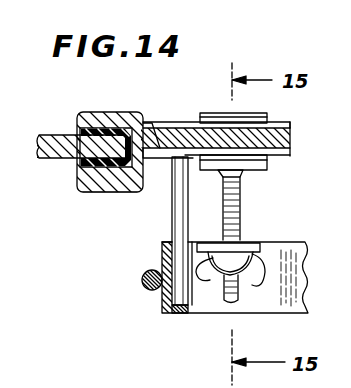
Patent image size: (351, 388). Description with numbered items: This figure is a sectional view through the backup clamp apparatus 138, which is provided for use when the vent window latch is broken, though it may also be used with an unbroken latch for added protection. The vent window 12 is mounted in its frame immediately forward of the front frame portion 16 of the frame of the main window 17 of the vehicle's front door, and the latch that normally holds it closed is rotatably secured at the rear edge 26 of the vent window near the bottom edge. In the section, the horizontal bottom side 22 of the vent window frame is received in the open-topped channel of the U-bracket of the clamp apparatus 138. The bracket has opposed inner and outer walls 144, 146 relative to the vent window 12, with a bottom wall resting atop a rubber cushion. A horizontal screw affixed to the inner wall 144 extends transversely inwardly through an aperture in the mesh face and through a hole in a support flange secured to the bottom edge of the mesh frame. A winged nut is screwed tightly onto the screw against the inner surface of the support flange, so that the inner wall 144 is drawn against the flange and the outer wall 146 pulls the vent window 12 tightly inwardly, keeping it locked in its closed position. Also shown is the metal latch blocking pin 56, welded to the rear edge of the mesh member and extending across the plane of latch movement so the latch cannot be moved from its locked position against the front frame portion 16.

The vent window 12 is at (290, 140).
The front frame portion 16 is at (102, 193).
The main window 17 is at (47, 136).
The horizontal bottom side 22 is at (288, 122).
The rear edge 26 is at (140, 112).
The latch blocking pin 56 is at (172, 220).
The backup clamp apparatus 138 is at (131, 258).
The inner wall 144 is at (265, 172).
The outer wall 146 is at (221, 112).